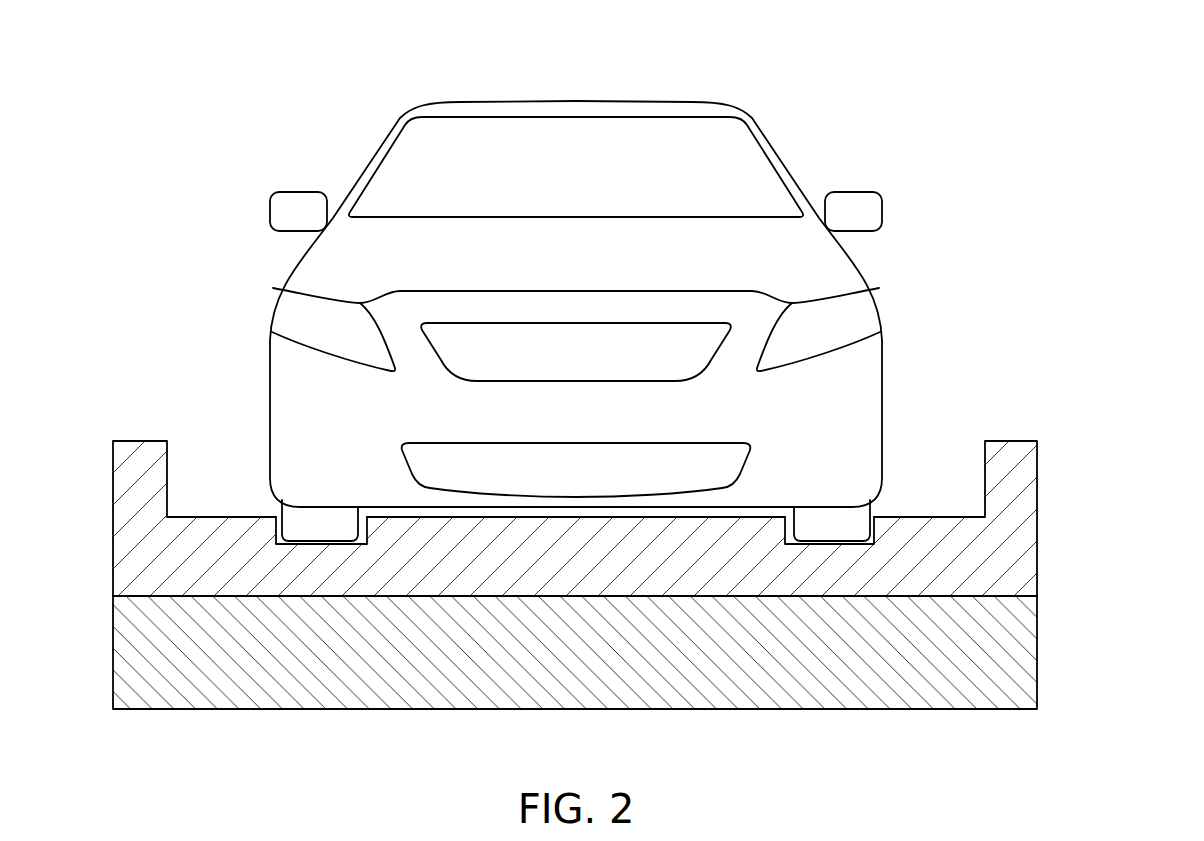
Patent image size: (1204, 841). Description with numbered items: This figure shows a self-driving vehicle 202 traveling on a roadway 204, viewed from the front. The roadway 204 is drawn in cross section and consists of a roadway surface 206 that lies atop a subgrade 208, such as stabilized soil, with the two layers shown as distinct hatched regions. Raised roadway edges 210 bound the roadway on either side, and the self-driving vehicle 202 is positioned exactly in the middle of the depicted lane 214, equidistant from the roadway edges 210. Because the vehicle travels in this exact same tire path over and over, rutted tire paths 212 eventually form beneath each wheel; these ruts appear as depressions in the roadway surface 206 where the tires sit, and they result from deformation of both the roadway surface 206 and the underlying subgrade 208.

The self-driving vehicle 202 is at (338, 104).
The roadway 204 is at (602, 545).
The roadway surface 206 is at (930, 517).
The subgrade 208 is at (112, 662).
The roadway edges 210 is at (135, 441).
The rutted tire paths 212 is at (307, 546).
The lane 214 is at (208, 455).